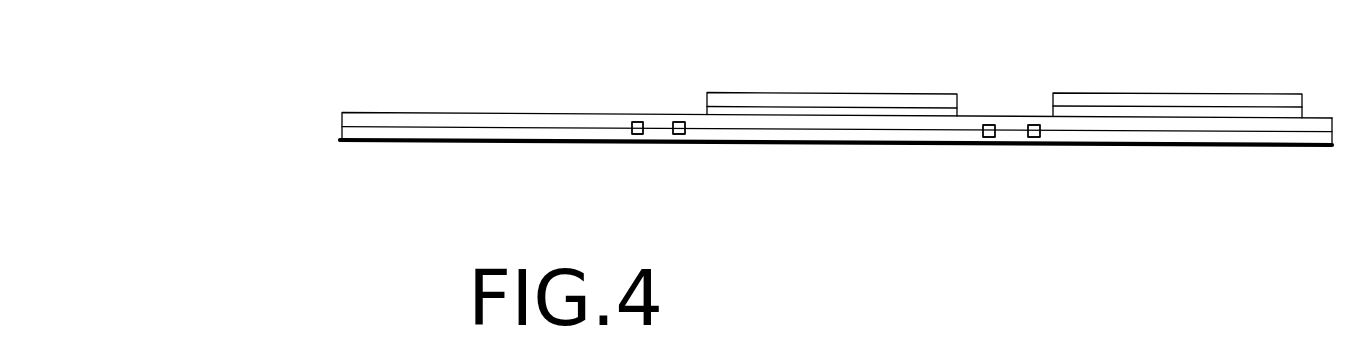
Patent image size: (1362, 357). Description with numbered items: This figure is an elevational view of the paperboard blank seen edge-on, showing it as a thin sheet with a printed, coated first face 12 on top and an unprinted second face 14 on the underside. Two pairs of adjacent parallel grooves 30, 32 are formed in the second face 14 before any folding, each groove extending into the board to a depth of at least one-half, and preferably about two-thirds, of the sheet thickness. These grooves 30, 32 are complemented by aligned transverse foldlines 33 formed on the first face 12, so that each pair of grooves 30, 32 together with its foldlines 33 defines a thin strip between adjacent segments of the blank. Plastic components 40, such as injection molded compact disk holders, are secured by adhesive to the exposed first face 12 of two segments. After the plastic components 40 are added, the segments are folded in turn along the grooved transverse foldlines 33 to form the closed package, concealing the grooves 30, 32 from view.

The first face 12 is at (390, 112).
The second face 14 is at (418, 127).
The pair of adjacent parallel grooves 30 is at (679, 134).
The pair of adjacent parallel grooves 32 is at (1034, 137).
The transverse foldlines 33 is at (678, 122).
The plastic component 40 is at (788, 92).